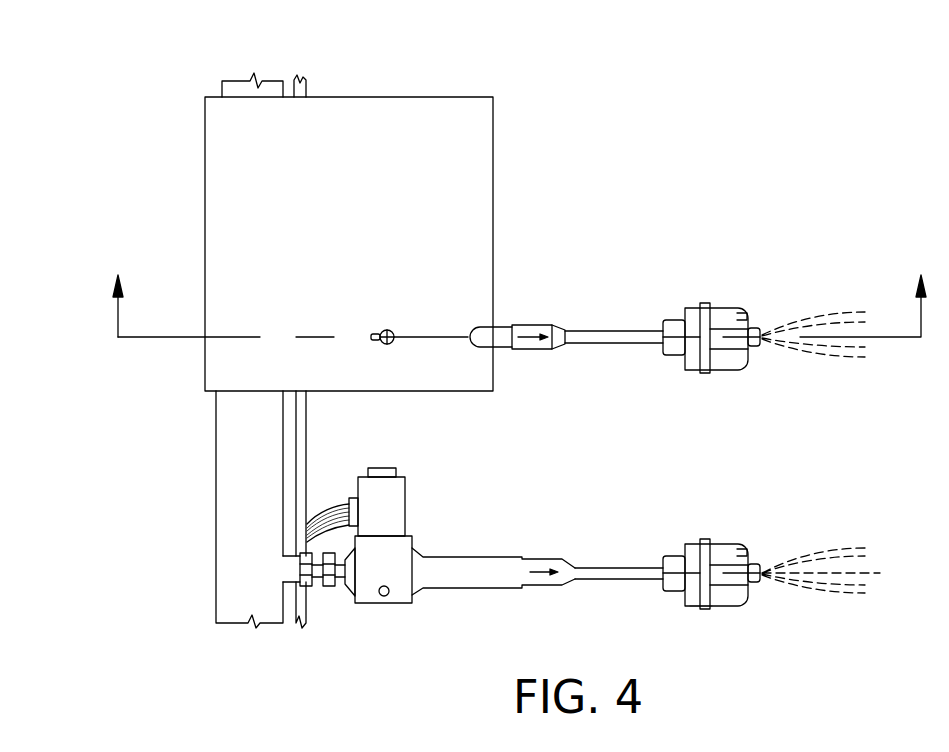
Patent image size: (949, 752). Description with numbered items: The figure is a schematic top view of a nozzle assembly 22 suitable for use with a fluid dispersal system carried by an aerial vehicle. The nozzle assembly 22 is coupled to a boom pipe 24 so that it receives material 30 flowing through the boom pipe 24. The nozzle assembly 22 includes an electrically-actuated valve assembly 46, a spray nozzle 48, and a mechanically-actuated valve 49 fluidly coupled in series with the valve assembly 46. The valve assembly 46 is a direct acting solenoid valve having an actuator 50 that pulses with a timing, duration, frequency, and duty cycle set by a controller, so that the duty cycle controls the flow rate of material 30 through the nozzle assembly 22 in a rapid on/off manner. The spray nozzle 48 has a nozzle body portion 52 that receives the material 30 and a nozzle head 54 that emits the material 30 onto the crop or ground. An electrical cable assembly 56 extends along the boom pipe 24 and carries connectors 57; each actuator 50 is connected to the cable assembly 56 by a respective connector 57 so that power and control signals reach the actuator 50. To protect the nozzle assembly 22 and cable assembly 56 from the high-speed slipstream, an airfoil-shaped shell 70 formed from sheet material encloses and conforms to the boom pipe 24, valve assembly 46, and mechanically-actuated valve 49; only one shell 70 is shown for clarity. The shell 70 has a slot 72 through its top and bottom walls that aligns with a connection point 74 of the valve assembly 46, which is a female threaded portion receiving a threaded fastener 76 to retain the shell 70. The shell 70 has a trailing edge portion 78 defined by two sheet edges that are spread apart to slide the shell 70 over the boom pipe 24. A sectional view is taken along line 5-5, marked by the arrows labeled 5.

The section line 5- 5 is at (520, 287).
The nozzle assembly 22 is at (600, 222).
The boom pipe 24 is at (216, 540).
The material 30 is at (845, 357).
The electrically-actuated valve assembly 46 is at (458, 505).
The spray nozzle 48 is at (698, 288).
The mechanically-actuated valve 49 is at (534, 350).
The actuator 50 is at (405, 497).
The nozzle body portion 52 is at (598, 345).
The nozzle head 54 is at (712, 607).
The electrical cable assembly 56 is at (308, 453).
The connector 57 is at (337, 503).
The airfoil-shaped shell 70 is at (495, 117).
The slot 72 is at (372, 342).
The connection point 74 is at (382, 596).
The threaded fastener 76 is at (392, 330).
The trailing edge portion 78 is at (533, 178).